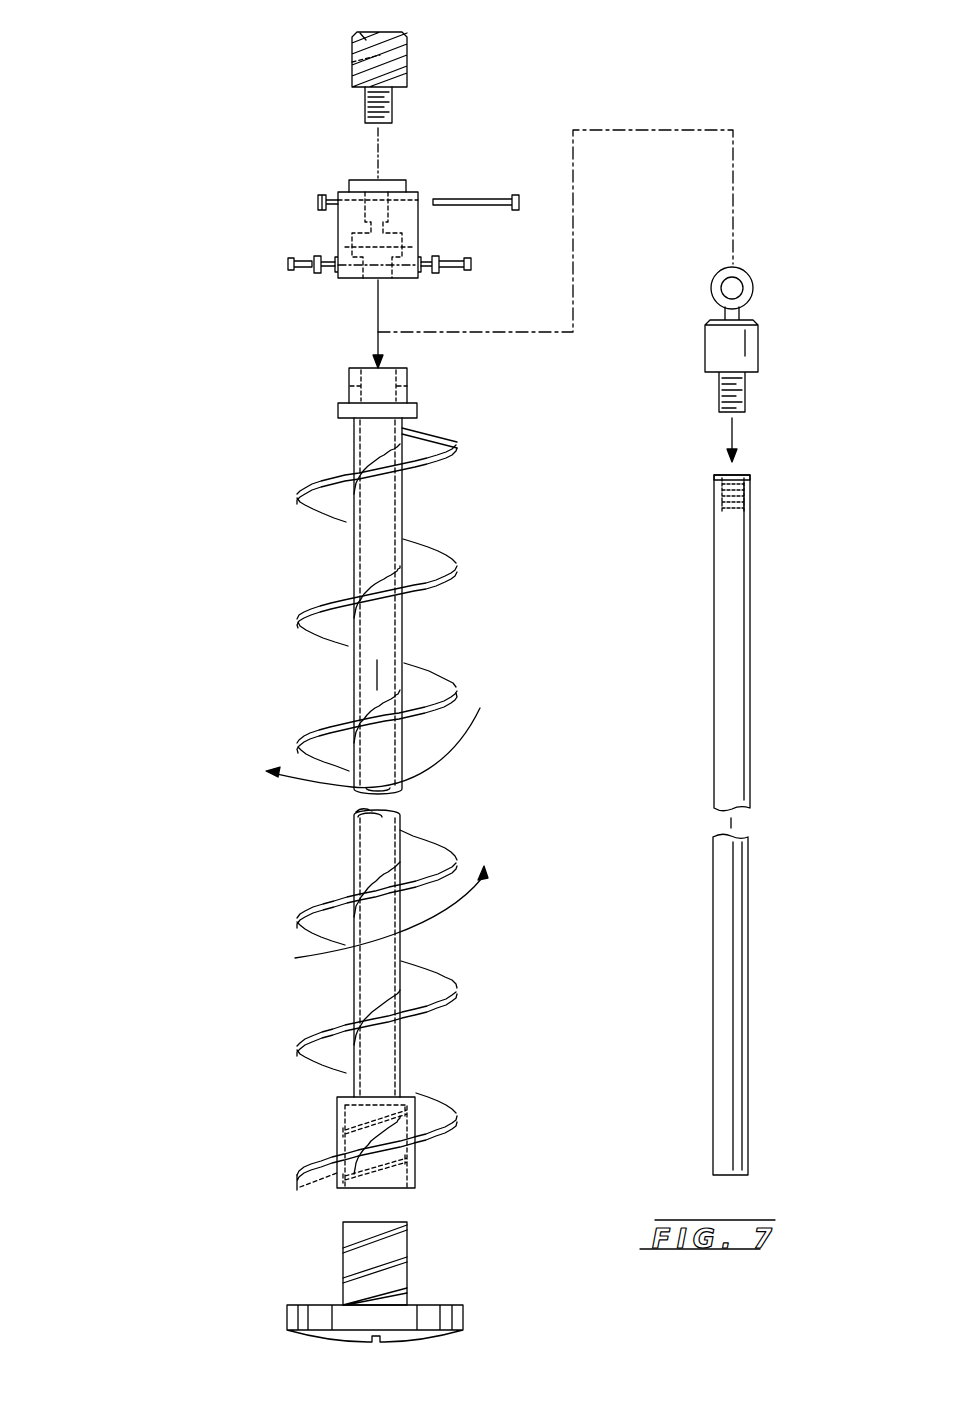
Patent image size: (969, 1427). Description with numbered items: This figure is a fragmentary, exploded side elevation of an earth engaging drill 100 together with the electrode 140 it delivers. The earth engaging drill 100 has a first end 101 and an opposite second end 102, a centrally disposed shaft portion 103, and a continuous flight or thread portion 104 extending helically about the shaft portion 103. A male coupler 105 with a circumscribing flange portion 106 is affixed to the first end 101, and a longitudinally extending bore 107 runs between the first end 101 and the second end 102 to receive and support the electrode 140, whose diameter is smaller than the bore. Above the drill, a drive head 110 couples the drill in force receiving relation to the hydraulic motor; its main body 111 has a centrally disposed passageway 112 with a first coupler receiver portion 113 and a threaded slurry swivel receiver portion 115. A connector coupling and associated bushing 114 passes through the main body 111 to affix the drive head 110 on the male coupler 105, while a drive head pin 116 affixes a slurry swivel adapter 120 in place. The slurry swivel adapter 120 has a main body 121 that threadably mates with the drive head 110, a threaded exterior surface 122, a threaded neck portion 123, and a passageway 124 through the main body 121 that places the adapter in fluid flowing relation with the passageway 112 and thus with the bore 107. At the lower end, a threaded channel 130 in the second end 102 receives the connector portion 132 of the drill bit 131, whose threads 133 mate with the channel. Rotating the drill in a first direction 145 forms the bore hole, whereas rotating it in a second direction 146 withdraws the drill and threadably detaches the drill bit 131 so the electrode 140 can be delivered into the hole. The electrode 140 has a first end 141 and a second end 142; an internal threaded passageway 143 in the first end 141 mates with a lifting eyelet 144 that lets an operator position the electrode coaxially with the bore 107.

The earth engaging drill 100 is at (224, 708).
The first end 101 is at (410, 586).
The second end 102 is at (415, 1183).
The shaft portion 103 is at (387, 673).
The flight or thread portion 104 is at (443, 843).
The male coupler 105 is at (348, 382).
The circumscribing flange portion 106 is at (338, 410).
The longitudinally extending bore 107 is at (400, 493).
The drive head 110 is at (377, 197).
The main body 111 is at (408, 222).
The passageway 112 is at (365, 227).
The first coupler receiver portion 113 is at (413, 247).
The connector coupling and associated bushing 114 is at (293, 268).
The slurry swivel receiver portion 115 is at (388, 180).
The drive head pin 116 is at (319, 196).
The slurry swivel adapter 120 is at (372, 69).
The main body 121 is at (405, 80).
The threaded exterior surface 122 is at (360, 33).
The threaded neck portion 123 is at (363, 107).
The passageway 124 is at (352, 62).
The threaded channel 130 is at (300, 1187).
The drill bit 131 is at (405, 1317).
The connector portion 132 is at (361, 1254).
The threads 133 is at (348, 1300).
The electrode 140 is at (785, 622).
The first end 141 is at (752, 507).
The second end 142 is at (713, 1175).
The internal threaded passageway 143 is at (747, 497).
The lifting eyelet 144 is at (750, 340).
The first direction 145 is at (322, 788).
The second direction 146 is at (452, 925).